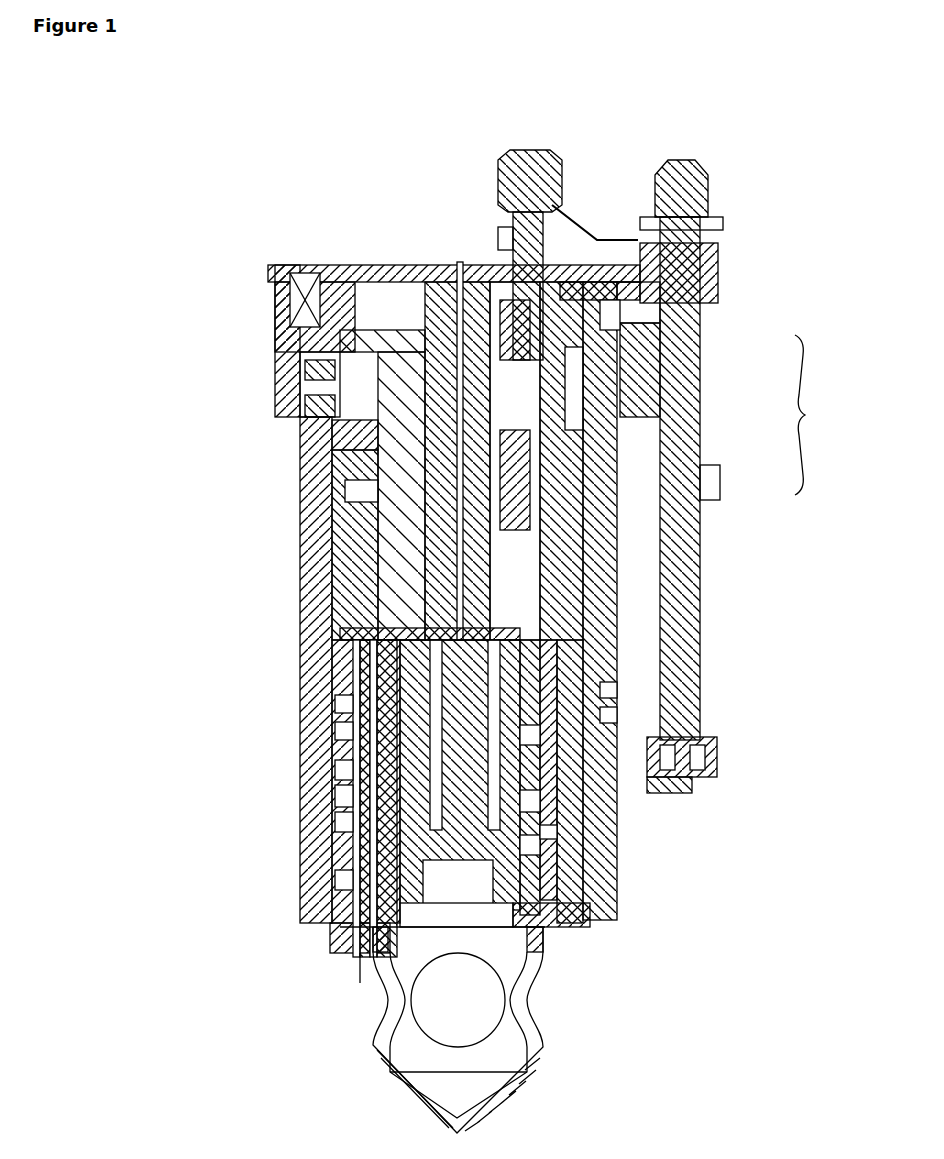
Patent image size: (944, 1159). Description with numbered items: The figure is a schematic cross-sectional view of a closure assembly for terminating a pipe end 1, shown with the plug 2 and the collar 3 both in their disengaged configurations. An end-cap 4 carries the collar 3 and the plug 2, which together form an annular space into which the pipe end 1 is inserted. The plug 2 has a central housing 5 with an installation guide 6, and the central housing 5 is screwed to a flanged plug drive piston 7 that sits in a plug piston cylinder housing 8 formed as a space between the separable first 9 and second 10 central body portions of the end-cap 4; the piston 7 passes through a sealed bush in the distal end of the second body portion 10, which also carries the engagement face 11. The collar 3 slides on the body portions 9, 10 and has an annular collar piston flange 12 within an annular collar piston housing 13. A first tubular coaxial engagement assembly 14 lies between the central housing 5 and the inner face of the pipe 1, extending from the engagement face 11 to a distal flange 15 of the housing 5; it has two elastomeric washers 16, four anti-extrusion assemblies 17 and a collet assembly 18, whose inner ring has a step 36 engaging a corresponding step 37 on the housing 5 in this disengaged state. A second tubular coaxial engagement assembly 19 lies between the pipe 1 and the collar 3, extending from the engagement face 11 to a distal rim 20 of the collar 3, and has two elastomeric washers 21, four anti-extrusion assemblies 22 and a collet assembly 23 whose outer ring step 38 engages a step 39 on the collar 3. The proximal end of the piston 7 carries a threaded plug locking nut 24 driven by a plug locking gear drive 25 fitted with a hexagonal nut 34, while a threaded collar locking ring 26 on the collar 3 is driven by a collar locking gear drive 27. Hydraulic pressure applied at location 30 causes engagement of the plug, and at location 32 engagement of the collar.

The pipe end 1 is at (370, 980).
The plug 2 is at (560, 870).
The collar 3 is at (310, 915).
The end-cap 4 is at (813, 415).
The central housing 5 is at (720, 768).
The installation guide 6 is at (545, 1053).
The flanged plug drive piston 7 is at (590, 595).
The plug piston cylinder housing 8 is at (395, 563).
The first central body portion 9 is at (535, 380).
The second central body portion 10 is at (345, 600).
The engagement face 11 is at (555, 630).
The annular collar piston flange 12 is at (355, 460).
The annular collar piston housing 13 is at (330, 428).
The first tubular coaxial engagement assembly 14 is at (545, 830).
The distal flange 15 is at (465, 885).
The elastomeric washers 16 is at (600, 742).
The anti-extrusion assemblies 17 is at (525, 810).
The collet assembly 18 is at (575, 660).
The second tubular coaxial engagement assembly 19 is at (332, 797).
The distal rim 20 is at (335, 895).
The elastomeric washers 21 is at (380, 755).
The anti-extrusion assemblies 22 is at (340, 825).
The collet assembly 23 is at (360, 665).
The threaded plug locking nut 24 is at (653, 292).
The plug locking gear drive 25 is at (510, 270).
The threaded collar locking ring 26 is at (300, 348).
The collar locking gear drive 27 is at (707, 248).
The plug engagement pressurisation location 30 is at (330, 633).
The collar engagement pressurisation location 32 is at (350, 490).
The hexagonal nut 34 is at (703, 218).
The step 36 is at (590, 716).
The step 37 is at (355, 730).
The step 38 is at (590, 692).
The step 39 is at (340, 705).